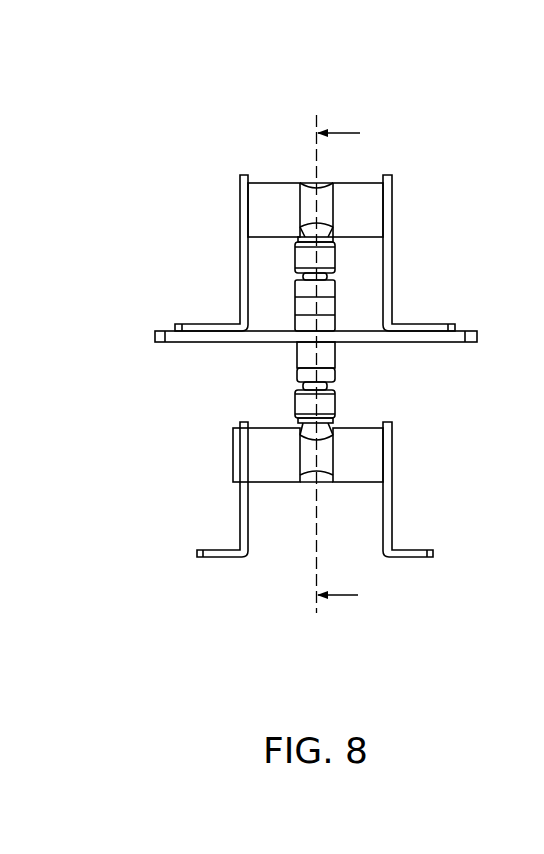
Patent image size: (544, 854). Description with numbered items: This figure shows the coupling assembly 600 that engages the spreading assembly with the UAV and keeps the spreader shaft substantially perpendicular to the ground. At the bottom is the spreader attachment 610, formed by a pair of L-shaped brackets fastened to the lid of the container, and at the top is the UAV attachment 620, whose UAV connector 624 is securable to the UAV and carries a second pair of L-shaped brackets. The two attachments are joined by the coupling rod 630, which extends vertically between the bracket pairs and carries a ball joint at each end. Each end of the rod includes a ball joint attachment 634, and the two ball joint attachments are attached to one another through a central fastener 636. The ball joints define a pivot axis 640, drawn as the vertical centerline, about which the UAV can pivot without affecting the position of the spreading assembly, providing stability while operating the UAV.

The coupling assembly 600 is at (167, 105).
The spreader attachment 610 is at (433, 497).
The UAV attachment 620 is at (430, 227).
The UAV connector 624 is at (162, 331).
The coupling rod 630 is at (317, 325).
The ball joint attachment 634 is at (300, 260).
The central fastener 636 is at (337, 323).
The pivot axis 640 is at (316, 122).